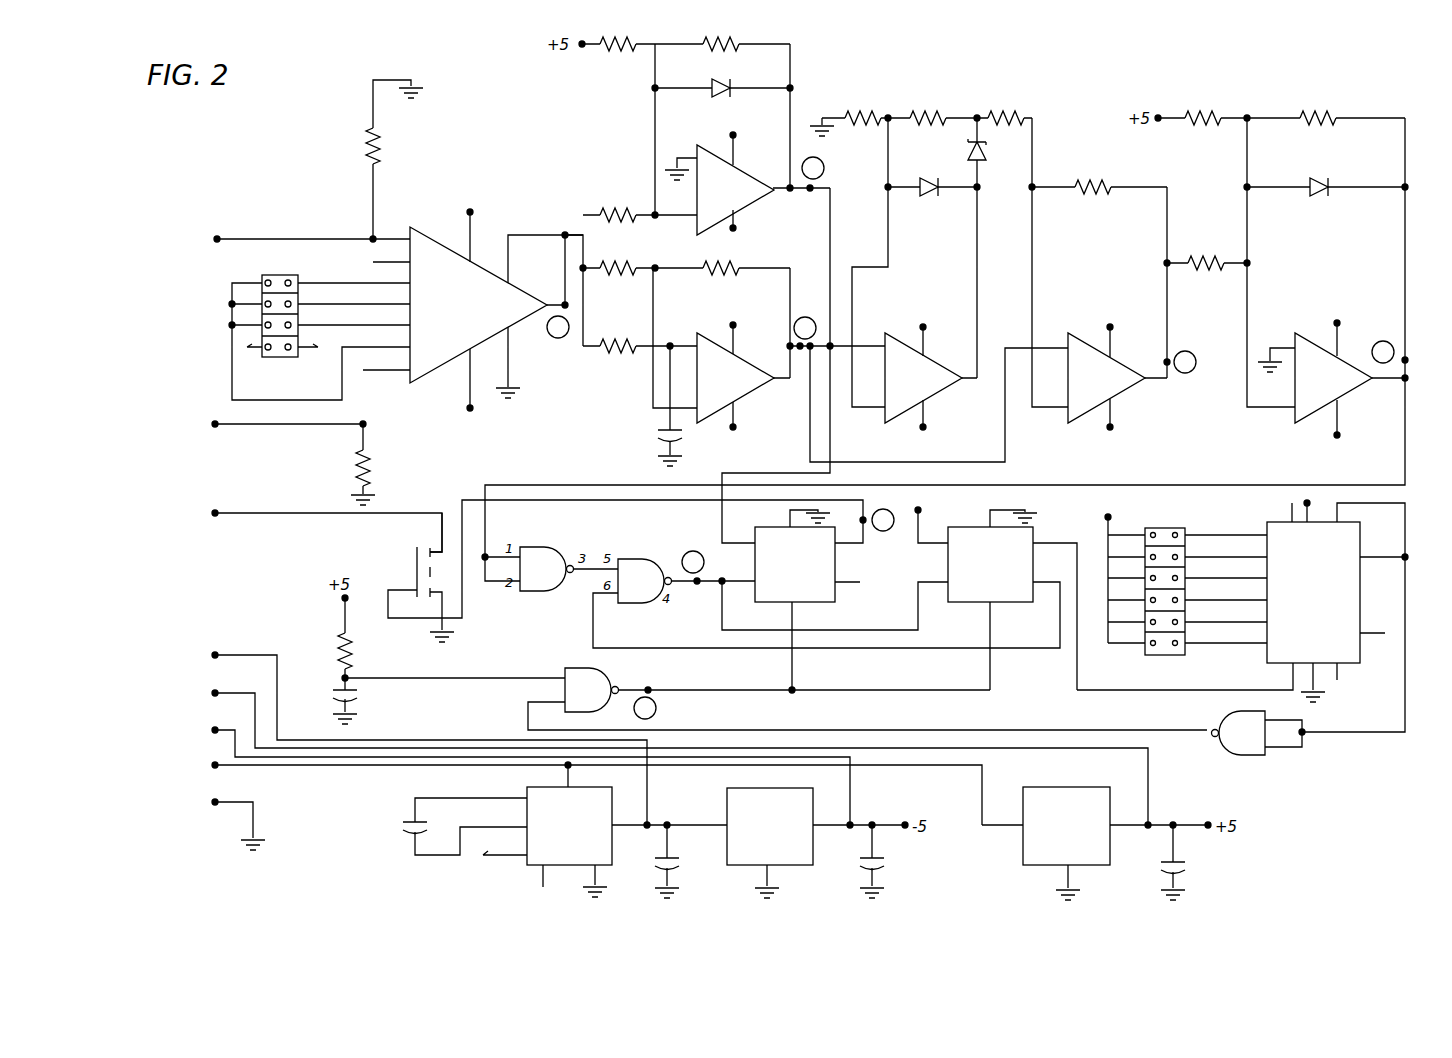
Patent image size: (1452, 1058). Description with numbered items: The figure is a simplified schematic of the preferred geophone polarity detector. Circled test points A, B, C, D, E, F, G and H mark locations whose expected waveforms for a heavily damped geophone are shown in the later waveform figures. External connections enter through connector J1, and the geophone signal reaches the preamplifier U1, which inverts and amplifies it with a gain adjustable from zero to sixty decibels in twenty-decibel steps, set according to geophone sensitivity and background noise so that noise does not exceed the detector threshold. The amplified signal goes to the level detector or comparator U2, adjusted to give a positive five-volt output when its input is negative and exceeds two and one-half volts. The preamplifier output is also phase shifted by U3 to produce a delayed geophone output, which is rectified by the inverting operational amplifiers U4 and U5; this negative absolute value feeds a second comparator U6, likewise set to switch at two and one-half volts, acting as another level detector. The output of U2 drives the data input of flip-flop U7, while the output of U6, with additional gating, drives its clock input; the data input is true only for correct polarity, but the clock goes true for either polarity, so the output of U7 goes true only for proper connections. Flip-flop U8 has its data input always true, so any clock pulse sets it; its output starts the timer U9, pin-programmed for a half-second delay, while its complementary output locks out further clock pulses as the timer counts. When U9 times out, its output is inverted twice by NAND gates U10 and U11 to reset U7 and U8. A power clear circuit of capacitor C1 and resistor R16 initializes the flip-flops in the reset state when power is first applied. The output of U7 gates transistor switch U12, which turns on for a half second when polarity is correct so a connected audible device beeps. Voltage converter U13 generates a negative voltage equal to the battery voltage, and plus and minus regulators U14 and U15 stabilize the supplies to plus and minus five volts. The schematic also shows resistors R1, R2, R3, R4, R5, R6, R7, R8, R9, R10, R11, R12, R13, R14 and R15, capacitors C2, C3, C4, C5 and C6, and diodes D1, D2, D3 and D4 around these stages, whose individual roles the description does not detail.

The connector J1 is at (167, 523).
The resistor R1 is at (370, 464).
The resistor R2 is at (380, 159).
The resistor R3 is at (618, 54).
The resistor R4 is at (640, 208).
The resistor R5 is at (722, 279).
The resistor R6 is at (619, 261).
The resistor R7 is at (640, 338).
The resistor R8 is at (1004, 106).
The resistor R9 is at (932, 106).
The resistor R10 is at (855, 106).
The resistor R11 is at (1099, 175).
The resistor R12 is at (1207, 253).
The resistor R13 is at (1326, 106).
The resistor R14 is at (1202, 106).
The resistor R15 is at (722, 55).
The power clear resistor R16 is at (360, 644).
The power clear capacitor C1 is at (355, 706).
The capacitor C2 is at (446, 826).
The capacitor C3 is at (676, 861).
The capacitor C4 is at (881, 861).
The capacitor C5 is at (1183, 862).
The capacitor C6 is at (656, 406).
The diode D1 is at (722, 82).
The diode D2 is at (932, 179).
The zener diode D3 is at (989, 152).
The diode D4 is at (1326, 179).
The preamplifier U1 is at (406, 312).
The level detector U2 is at (706, 145).
The phase shifter U3 is at (736, 377).
The rectifier operational amplifier U4 is at (924, 378).
The rectifier operational amplifier U5 is at (1110, 378).
The comparator U6 is at (1331, 379).
The flip-flop U7 is at (800, 599).
The flip-flop U8 is at (990, 590).
The timer U9 is at (1242, 594).
The NAND gate U10 is at (867, 696).
The NAND gate U11 is at (1296, 636).
The transistor switch U12 is at (619, 571).
The voltage converter U13 is at (553, 831).
The voltage regulator U14 is at (768, 843).
The voltage regulator U15 is at (1051, 843).
The test point A is at (558, 327).
The test point B is at (813, 168).
The test point C is at (805, 328).
The test point D is at (1185, 362).
The test point E is at (1383, 352).
The test point F is at (693, 562).
The test point G is at (645, 708).
The test point H is at (883, 520).